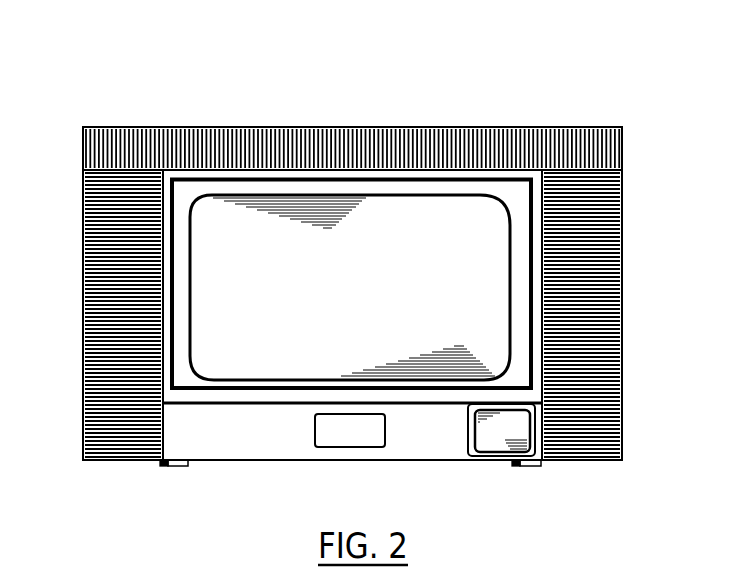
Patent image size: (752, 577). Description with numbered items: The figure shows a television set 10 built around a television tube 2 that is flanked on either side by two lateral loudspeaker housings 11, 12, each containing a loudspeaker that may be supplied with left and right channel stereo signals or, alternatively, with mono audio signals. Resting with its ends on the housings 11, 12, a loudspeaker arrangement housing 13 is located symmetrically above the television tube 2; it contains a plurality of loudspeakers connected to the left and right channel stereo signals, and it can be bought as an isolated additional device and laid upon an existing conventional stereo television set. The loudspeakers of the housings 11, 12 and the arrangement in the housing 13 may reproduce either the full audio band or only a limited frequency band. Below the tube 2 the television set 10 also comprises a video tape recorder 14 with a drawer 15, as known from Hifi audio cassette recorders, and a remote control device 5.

The television set 10 is at (540, 98).
The television tube 2 is at (208, 290).
The remote control device 5 is at (500, 443).
The lateral loudspeaker housing 11 is at (82, 348).
The lateral loudspeaker housing 12 is at (608, 300).
The loudspeaker arrangement housing 13 is at (612, 147).
The video tape recorder 14 is at (243, 448).
The drawer 15 is at (362, 438).